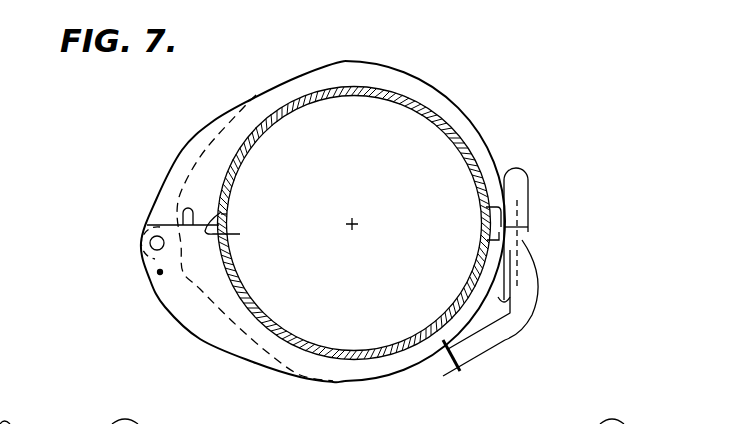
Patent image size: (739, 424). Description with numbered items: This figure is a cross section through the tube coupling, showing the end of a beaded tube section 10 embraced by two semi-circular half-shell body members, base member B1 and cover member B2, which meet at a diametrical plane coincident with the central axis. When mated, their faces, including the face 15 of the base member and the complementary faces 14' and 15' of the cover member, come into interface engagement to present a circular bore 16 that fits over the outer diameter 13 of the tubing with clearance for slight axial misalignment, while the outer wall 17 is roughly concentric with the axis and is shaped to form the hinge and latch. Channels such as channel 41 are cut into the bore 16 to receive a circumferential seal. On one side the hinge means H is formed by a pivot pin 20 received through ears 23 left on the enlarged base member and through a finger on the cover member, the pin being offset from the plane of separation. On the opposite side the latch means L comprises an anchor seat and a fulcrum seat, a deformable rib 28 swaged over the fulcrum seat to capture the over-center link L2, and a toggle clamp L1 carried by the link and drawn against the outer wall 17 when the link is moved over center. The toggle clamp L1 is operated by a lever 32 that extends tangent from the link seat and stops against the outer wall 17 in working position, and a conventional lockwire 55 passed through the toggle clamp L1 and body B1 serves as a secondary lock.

The beaded tube section 10 is at (462, 132).
The outer diameter of the tubing 13 is at (383, 90).
The circular bore 16 is at (412, 106).
The outer wall 17 is at (370, 61).
The deformable rib 28 is at (513, 168).
The over-center link L2 is at (518, 185).
The latch means L is at (540, 258).
The toggle clamp L1 is at (530, 318).
The lever 32 is at (497, 340).
The lockwire 55 is at (458, 371).
The face of base member 15 is at (465, 211).
The face of cover member 15' is at (461, 240).
The face of cover member 14' is at (206, 229).
The channel 41 is at (221, 214).
The pivot pin 20 is at (153, 238).
The ears 23 is at (158, 271).
The base member B1 is at (165, 297).
The cover member B2 is at (235, 225).
The hinge means H is at (128, 240).